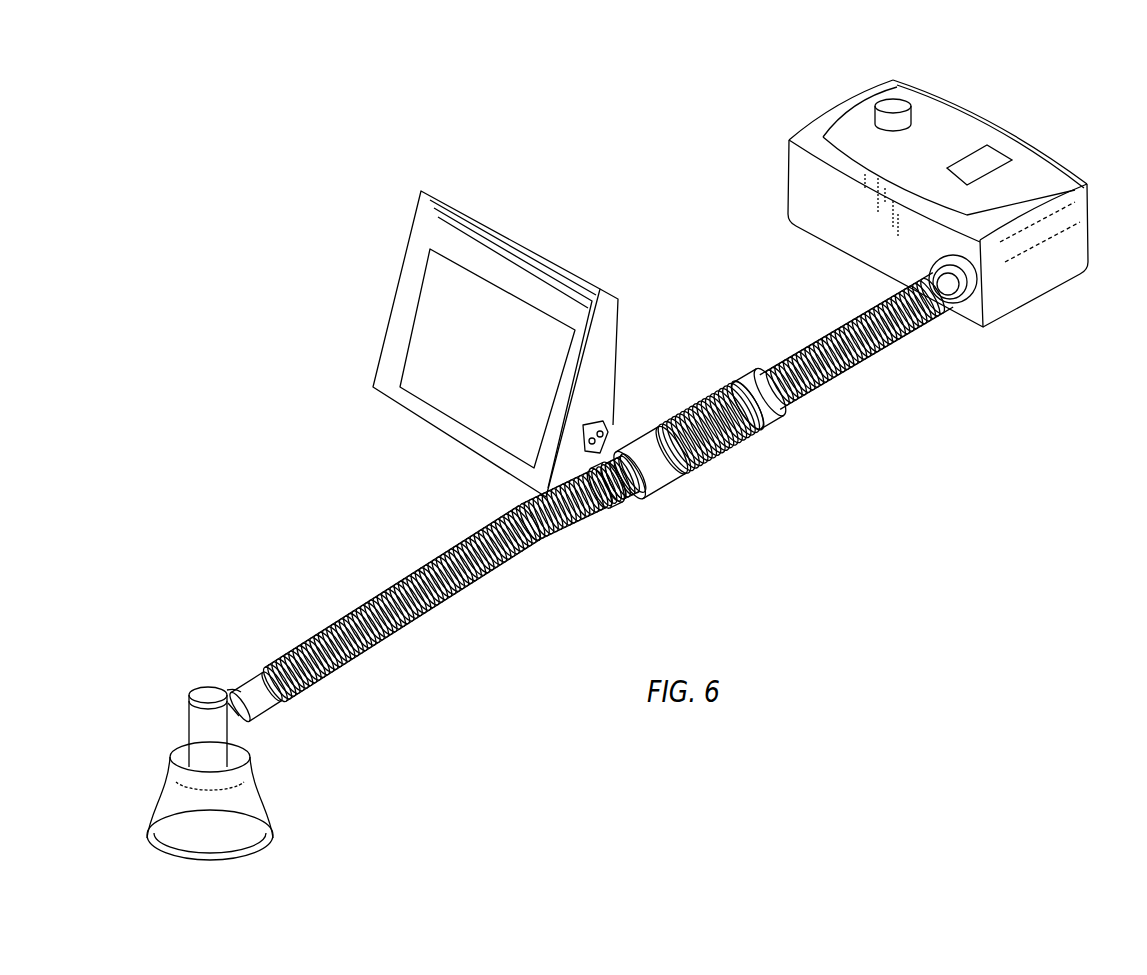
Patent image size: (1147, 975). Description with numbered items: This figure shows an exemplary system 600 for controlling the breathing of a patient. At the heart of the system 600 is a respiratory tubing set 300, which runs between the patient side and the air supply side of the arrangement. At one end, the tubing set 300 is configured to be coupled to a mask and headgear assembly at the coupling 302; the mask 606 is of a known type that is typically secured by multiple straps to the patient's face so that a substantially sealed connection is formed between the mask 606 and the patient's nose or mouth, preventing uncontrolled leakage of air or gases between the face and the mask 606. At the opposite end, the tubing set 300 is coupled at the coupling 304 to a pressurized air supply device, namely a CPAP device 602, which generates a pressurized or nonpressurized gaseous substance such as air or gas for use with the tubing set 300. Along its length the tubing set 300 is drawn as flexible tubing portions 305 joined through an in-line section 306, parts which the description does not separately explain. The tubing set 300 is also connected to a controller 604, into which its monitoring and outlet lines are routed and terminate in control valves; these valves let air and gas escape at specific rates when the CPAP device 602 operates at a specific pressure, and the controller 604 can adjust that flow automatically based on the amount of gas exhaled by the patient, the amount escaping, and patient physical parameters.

The system 600 is at (680, 178).
The CPAP device 602 is at (1032, 131).
The controller 604 is at (607, 287).
The respiratory tubing set 300 is at (440, 607).
The mask and headgear assembly coupling 302 is at (207, 692).
The CPAP device coupling 304 is at (958, 305).
The flexible conduit 305 is at (520, 562).
The coupler 306 is at (750, 433).
The mask 606 is at (263, 780).